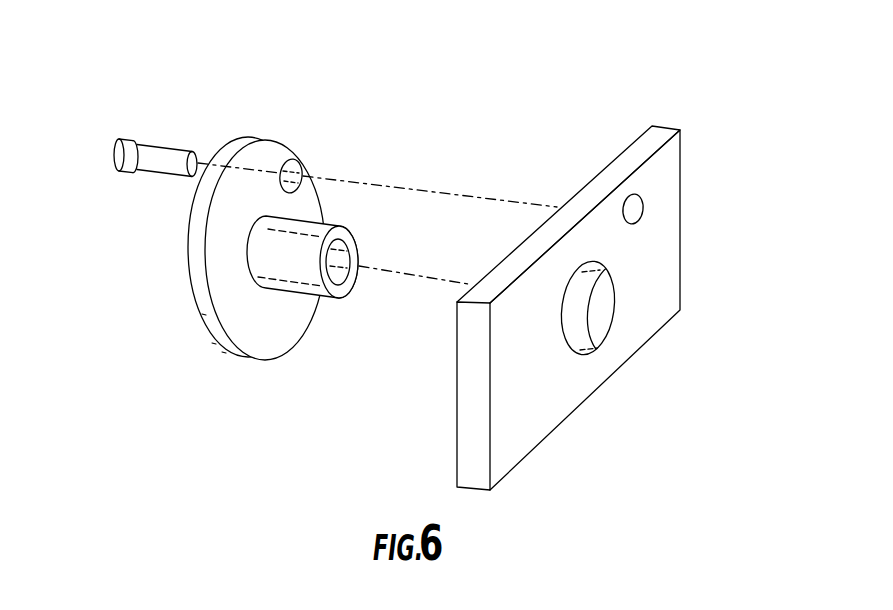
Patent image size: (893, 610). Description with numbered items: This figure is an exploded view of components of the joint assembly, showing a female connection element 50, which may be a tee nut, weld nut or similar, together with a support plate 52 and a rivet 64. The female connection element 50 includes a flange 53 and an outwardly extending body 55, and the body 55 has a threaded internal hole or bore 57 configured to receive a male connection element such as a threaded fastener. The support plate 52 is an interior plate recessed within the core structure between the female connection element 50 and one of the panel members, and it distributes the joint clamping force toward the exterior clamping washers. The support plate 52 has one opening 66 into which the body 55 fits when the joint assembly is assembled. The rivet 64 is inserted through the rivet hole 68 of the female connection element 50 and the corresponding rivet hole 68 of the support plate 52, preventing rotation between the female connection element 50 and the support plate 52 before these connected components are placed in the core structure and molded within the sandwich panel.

The female connection element 50 is at (265, 278).
The support plate 52 is at (667, 215).
The flange 53 is at (223, 297).
The body 55 is at (312, 238).
The bore 57 is at (338, 280).
The rivet 64 is at (172, 160).
The opening 66 is at (581, 320).
The rivet hole 68 is at (301, 174).